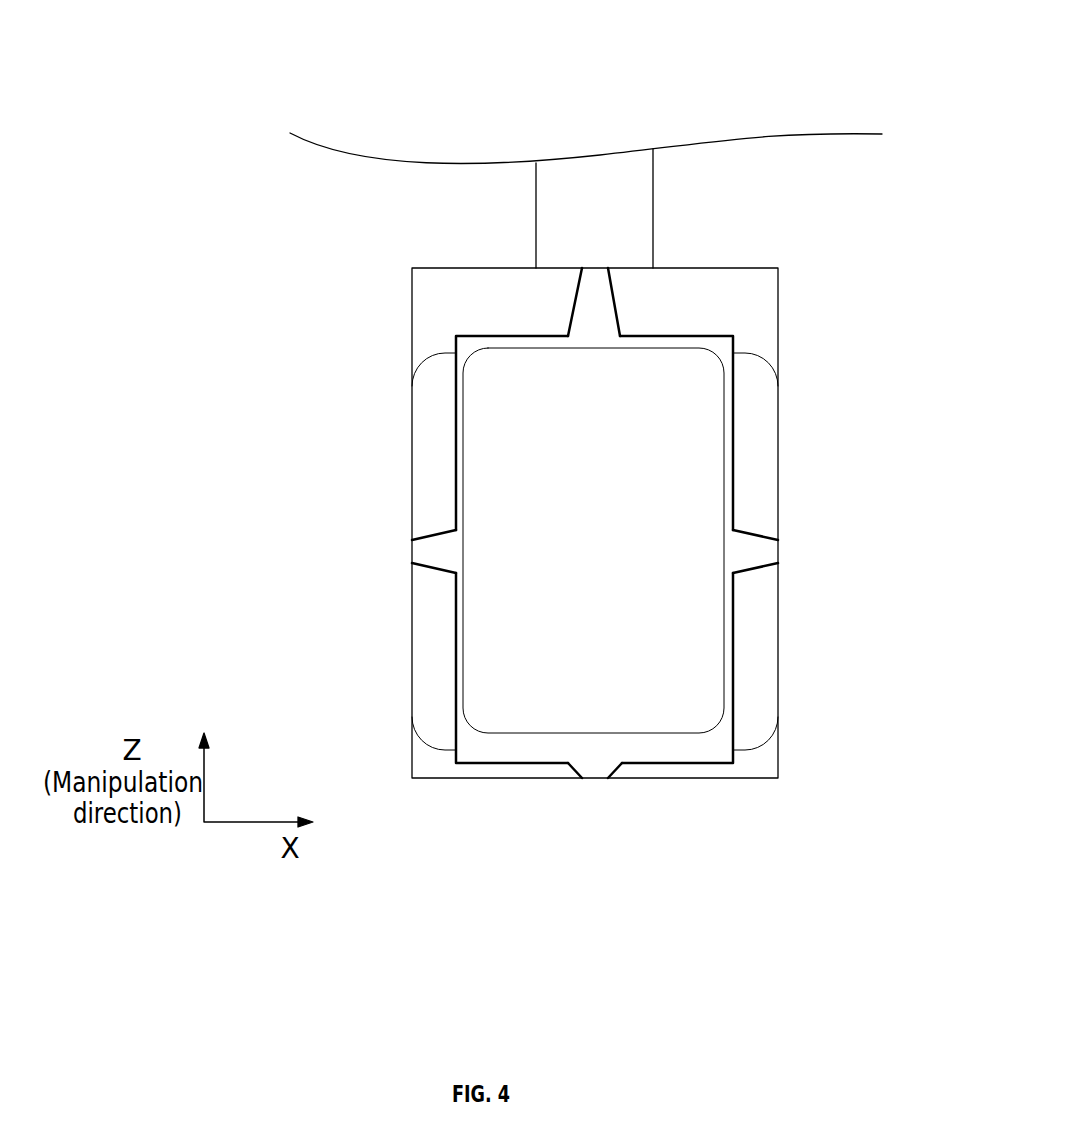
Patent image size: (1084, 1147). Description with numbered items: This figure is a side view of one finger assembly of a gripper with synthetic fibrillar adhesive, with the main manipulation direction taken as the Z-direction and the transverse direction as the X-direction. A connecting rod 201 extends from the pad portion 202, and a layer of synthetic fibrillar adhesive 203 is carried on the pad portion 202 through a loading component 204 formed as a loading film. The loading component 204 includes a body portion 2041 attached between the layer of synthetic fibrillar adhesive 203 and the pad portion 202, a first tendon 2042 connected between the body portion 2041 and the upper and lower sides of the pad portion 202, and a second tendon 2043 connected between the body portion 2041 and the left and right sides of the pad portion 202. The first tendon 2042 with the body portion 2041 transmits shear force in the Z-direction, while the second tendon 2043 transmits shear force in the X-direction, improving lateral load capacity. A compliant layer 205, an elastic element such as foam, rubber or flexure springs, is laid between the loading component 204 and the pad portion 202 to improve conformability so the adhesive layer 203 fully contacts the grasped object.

The connecting rod 201 is at (602, 205).
The pad portion 202 is at (752, 297).
The layer of synthetic fibrillar adhesive 203 is at (634, 652).
The loading component 204 is at (262, 325).
The body portion 2041 is at (457, 442).
The first tendon 2042 is at (590, 310).
The second tendon 2043 is at (438, 558).
The compliant layer 205 is at (758, 448).